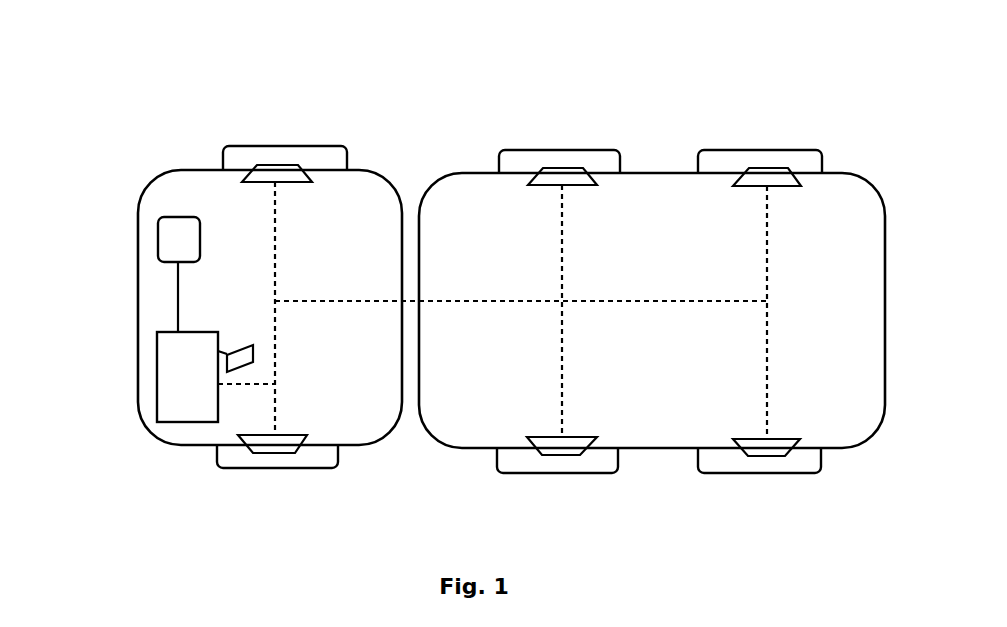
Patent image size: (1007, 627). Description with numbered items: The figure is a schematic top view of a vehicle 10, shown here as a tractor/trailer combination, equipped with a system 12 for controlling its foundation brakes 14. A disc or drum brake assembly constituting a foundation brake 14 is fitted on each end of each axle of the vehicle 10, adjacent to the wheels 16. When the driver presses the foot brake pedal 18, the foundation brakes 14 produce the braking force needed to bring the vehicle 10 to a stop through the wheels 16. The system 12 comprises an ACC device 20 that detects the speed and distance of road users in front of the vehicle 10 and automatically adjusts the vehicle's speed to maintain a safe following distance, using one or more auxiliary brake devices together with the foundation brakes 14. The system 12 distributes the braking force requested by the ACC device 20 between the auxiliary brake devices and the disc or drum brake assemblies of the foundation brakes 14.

The vehicle 10 is at (632, 83).
The system 12 is at (153, 384).
The foundation brake 14 is at (733, 439).
The wheels 16 is at (342, 473).
The foot brake pedal 18 is at (238, 332).
The ACC device 20 is at (172, 250).